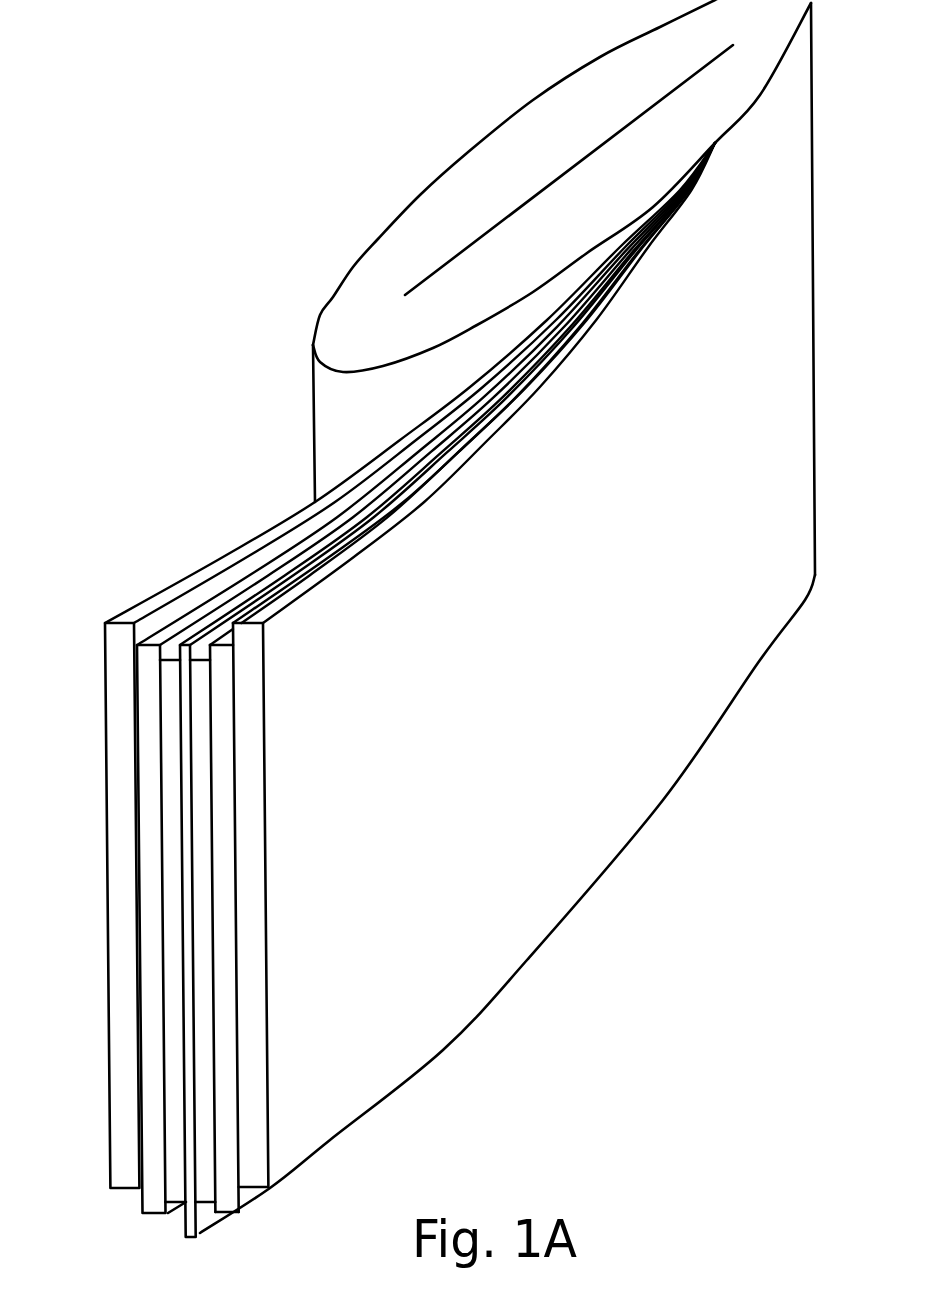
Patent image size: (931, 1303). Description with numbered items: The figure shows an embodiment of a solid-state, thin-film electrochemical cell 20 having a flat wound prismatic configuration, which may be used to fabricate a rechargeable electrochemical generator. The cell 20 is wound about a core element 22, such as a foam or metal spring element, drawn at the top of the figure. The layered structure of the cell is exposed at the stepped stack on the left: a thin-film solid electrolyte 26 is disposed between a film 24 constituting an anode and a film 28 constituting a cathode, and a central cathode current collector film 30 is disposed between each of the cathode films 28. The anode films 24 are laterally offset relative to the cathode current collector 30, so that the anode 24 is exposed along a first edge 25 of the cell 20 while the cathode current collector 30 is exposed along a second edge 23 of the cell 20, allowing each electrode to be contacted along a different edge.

The electrochemical cell 20 is at (570, 594).
The core element 22 is at (532, 197).
The second edge 23 is at (443, 1048).
The anode film 24 is at (248, 643).
The first edge 25 is at (223, 558).
The solid electrolyte 26 is at (223, 770).
The cathode film 28 is at (203, 885).
The cathode current collector film 30 is at (192, 1125).